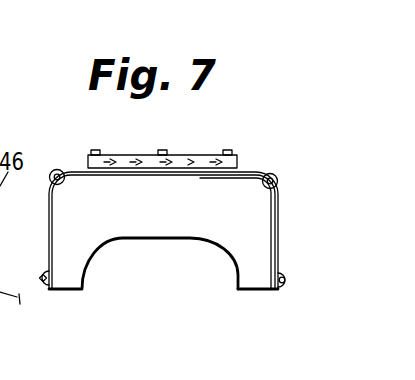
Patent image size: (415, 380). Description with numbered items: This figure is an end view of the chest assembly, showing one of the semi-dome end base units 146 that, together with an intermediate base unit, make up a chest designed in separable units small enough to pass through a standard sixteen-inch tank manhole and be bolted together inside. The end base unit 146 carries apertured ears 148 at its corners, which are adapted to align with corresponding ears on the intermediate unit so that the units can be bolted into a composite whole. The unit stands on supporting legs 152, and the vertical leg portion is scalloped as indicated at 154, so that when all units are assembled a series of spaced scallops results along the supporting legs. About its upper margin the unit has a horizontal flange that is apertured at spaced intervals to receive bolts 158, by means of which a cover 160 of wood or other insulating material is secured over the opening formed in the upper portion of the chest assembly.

The end base unit 146 is at (196, 230).
The apertured ears 148 is at (270, 173).
The supporting legs 152 is at (256, 272).
The scallops 154 is at (121, 240).
The bolts 158 is at (103, 153).
The cover 160 is at (200, 161).